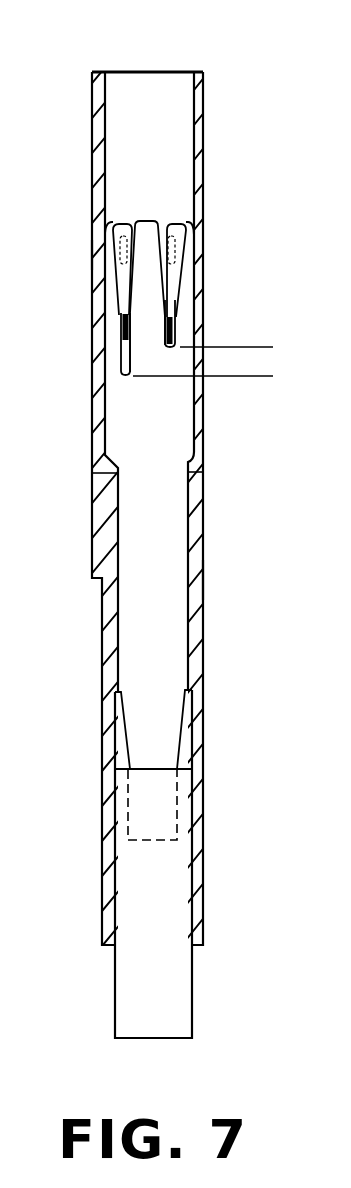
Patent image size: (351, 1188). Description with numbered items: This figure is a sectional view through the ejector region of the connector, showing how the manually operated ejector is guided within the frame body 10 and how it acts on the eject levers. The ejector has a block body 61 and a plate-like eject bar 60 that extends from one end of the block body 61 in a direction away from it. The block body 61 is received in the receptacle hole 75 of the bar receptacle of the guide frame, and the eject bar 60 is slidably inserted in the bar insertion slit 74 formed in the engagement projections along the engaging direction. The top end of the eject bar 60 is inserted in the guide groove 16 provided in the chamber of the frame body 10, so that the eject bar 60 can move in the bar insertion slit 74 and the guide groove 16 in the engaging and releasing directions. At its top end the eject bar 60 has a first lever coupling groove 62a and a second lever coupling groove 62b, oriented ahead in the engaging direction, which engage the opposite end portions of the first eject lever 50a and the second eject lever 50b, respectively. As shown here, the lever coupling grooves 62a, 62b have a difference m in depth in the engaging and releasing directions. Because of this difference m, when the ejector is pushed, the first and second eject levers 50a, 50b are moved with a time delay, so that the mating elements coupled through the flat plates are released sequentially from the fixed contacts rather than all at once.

The frame body 10 is at (92, 256).
The guide groove 16 is at (172, 100).
The eject bar 60 is at (146, 233).
The first lever coupling groove 62a is at (121, 300).
The second lever coupling groove 62b is at (203, 278).
The first eject lever 50a is at (124, 347).
The second eject lever 50b is at (203, 305).
The difference in depth m is at (253, 315).
The bar insertion slit 74 is at (204, 585).
The receptacle hole 75 is at (110, 561).
The block body 61 is at (178, 1005).